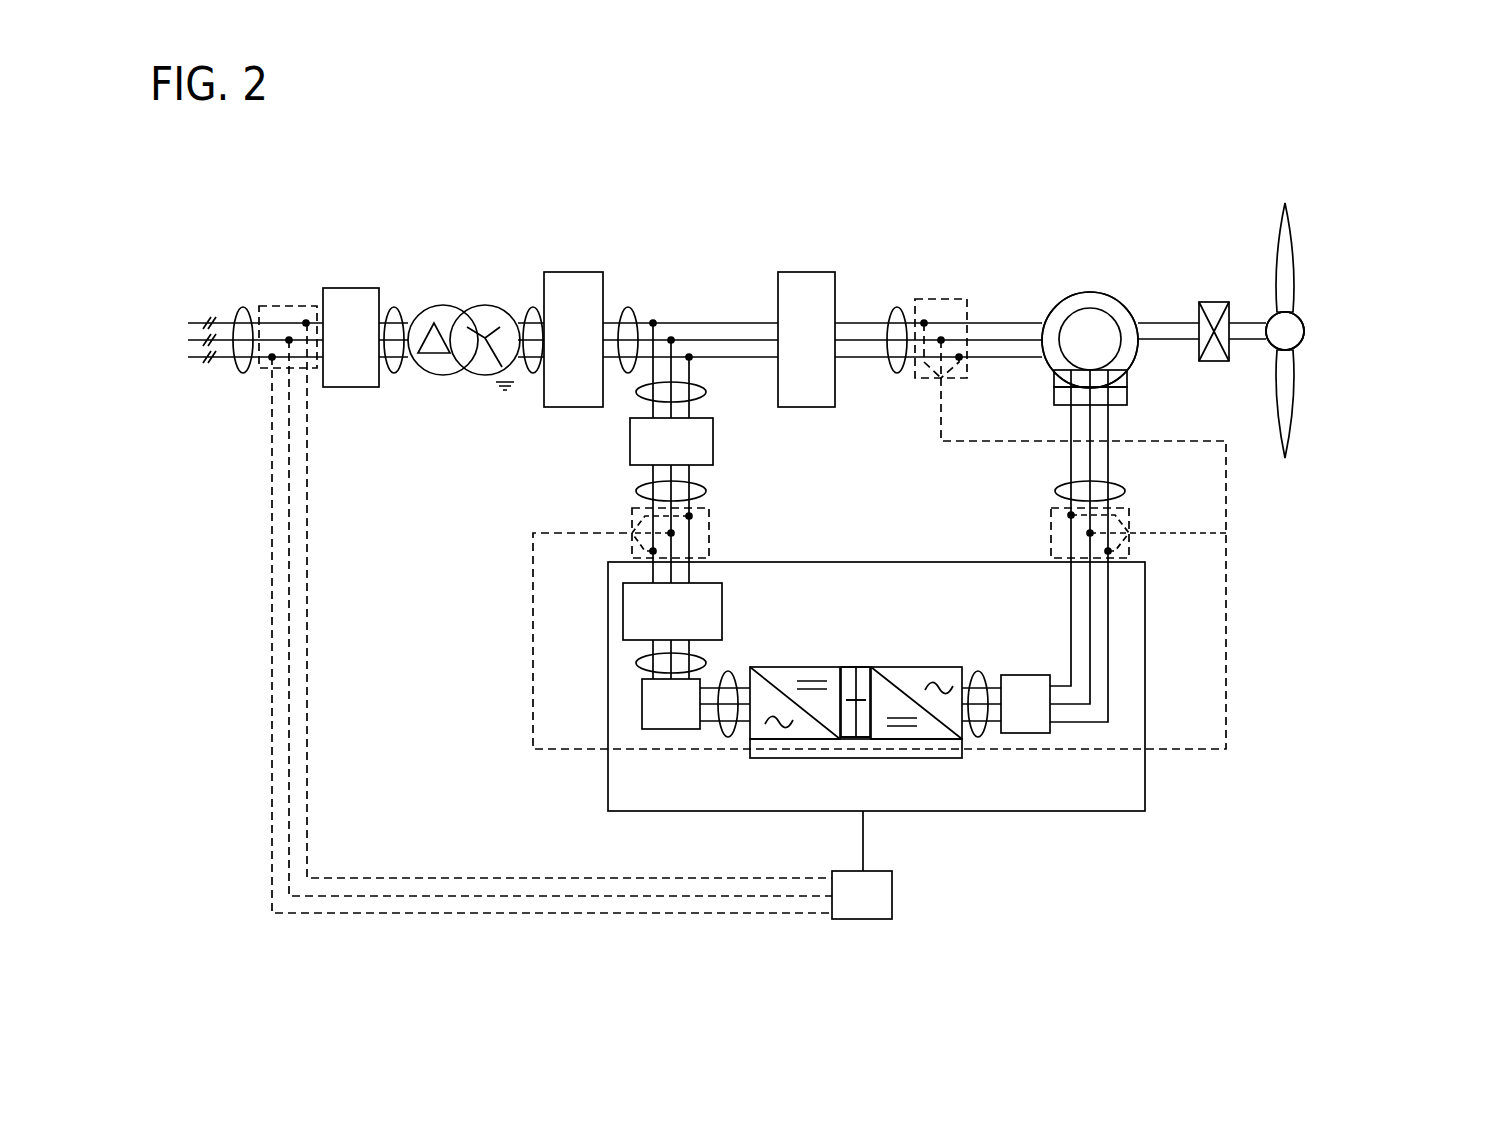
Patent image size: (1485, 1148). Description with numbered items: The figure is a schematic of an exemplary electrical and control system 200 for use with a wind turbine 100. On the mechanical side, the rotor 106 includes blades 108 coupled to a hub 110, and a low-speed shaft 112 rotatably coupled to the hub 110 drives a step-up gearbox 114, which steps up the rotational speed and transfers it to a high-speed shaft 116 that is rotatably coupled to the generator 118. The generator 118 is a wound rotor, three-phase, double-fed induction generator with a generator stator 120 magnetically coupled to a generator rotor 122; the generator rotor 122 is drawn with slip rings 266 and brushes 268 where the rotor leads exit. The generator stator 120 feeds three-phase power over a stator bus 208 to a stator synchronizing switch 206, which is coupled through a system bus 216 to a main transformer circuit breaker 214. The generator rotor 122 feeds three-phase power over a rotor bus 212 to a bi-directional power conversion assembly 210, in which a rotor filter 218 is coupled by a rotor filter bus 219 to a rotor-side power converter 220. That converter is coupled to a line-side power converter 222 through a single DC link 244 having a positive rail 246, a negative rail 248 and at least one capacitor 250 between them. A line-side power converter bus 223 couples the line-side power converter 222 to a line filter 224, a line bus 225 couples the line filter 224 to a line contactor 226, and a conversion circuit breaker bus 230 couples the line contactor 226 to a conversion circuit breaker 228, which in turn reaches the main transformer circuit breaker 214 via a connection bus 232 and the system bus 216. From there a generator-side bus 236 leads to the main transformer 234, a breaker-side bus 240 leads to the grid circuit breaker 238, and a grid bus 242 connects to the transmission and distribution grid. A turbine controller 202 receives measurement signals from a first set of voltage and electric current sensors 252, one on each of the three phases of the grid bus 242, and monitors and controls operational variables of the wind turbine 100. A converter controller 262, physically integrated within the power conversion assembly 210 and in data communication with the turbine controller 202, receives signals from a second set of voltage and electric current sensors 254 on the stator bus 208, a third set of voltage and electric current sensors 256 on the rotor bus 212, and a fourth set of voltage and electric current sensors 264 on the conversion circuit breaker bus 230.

The wind turbine 100 is at (1272, 184).
The rotor 106 is at (1308, 292).
The blades 108 is at (1298, 262).
The hub 110 is at (1305, 330).
The low-speed shaft 112 is at (1246, 323).
The step-up gearbox 114 is at (1212, 302).
The high-speed shaft 116 is at (1168, 323).
The generator 118 is at (1093, 257).
The generator stator 120 is at (1094, 296).
The generator rotor 122 is at (1085, 320).
The electrical and control system 200 is at (268, 195).
The turbine controller 202 is at (862, 895).
The stator synchronizing switch 206 is at (808, 272).
The stator bus 208 is at (897, 307).
The power conversion assembly 210 is at (1145, 680).
The rotor bus 212 is at (1125, 491).
The main transformer circuit breaker 214 is at (573, 272).
The system bus 216 is at (628, 307).
The rotor filter 218 is at (1020, 685).
The rotor filter bus 219 is at (980, 671).
The rotor-side power converter 220 is at (962, 740).
The line-side power converter 222 is at (750, 740).
The line-side power converter bus 223 is at (732, 671).
The line filter 224 is at (642, 700).
The line bus 225 is at (636, 663).
The line contactor 226 is at (623, 610).
The conversion circuit breaker 228 is at (713, 441).
The conversion circuit breaker bus 230 is at (706, 491).
The connection bus 232 is at (706, 392).
The main transformer 234 is at (485, 305).
The generator-side bus 236 is at (533, 307).
The grid circuit breaker 238 is at (353, 288).
The breaker-side bus 240 is at (394, 307).
The grid bus 242 is at (243, 305).
The DC link 244 is at (838, 622).
The positive rail 246 is at (862, 667).
The negative rail 248 is at (867, 740).
The capacitor 250 is at (845, 698).
The first set of voltage and electric current sensors 252 is at (262, 376).
The second set of voltage and electric current sensors 254 is at (957, 293).
The third set of voltage and electric current sensors 256 is at (1045, 530).
The converter controller 262 is at (915, 752).
The fourth set of voltage and electric current sensors 264 is at (709, 533).
The slip rings 266 is at (1127, 380).
The brushes 268 is at (1127, 400).